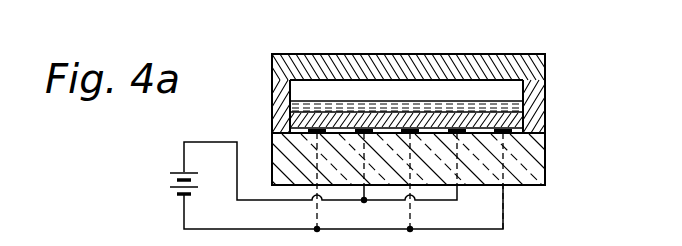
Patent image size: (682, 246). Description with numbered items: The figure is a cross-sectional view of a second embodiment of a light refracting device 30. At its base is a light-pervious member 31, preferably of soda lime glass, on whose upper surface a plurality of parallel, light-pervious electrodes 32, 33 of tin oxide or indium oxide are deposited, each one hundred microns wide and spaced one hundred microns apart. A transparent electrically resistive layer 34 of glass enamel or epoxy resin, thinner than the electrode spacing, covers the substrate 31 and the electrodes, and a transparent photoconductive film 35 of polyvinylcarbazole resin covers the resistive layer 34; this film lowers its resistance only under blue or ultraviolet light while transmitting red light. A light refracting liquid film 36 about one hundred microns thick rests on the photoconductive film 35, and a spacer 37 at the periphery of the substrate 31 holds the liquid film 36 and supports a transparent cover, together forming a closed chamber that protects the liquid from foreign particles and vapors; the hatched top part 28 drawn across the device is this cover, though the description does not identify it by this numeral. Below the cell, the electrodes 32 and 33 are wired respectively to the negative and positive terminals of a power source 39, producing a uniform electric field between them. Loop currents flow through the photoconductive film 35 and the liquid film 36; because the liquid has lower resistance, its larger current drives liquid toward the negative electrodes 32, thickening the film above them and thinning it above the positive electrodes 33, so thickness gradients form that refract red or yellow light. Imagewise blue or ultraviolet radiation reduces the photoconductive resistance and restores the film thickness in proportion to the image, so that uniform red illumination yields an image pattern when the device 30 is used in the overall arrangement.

The cap 28 is at (413, 56).
The light refracting device 30 is at (370, 40).
The light-pervious member 31 is at (543, 174).
The electrodes 32 is at (540, 118).
The electrodes 33 is at (462, 112).
The transparent electrically resistive layer 34 is at (276, 126).
The transparent photoconductive film 35 is at (292, 108).
The light refracting liquid film 36 is at (298, 77).
The spacer 37 is at (543, 93).
The power source 39 is at (174, 197).